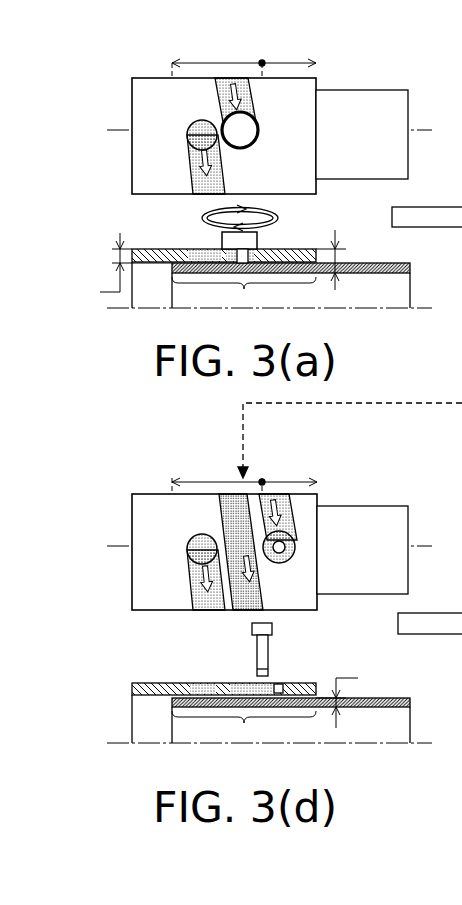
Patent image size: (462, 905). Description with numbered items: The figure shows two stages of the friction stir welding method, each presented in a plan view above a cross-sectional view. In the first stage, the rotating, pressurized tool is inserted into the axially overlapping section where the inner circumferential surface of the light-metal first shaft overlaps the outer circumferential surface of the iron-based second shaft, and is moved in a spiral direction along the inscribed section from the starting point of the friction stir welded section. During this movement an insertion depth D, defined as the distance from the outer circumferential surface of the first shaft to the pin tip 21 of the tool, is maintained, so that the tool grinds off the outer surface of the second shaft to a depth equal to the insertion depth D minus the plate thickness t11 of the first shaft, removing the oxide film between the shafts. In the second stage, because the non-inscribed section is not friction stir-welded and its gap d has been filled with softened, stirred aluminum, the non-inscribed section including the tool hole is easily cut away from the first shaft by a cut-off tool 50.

The pin tip 21 is at (257, 248).
The cut-off tool 50 is at (248, 654).
The insertion depth D is at (136, 262).
The plate thickness of the first shaft t11 is at (338, 252).
The gap d is at (337, 695).